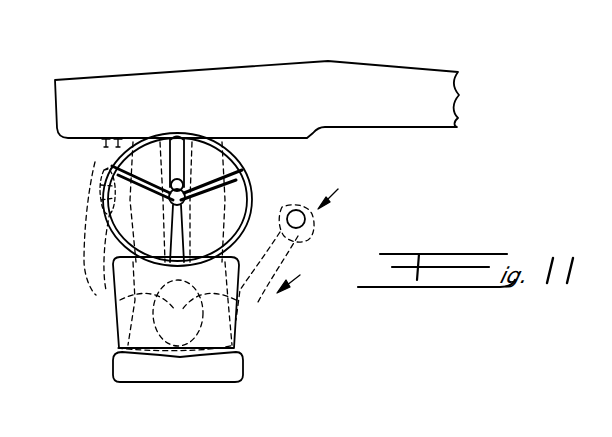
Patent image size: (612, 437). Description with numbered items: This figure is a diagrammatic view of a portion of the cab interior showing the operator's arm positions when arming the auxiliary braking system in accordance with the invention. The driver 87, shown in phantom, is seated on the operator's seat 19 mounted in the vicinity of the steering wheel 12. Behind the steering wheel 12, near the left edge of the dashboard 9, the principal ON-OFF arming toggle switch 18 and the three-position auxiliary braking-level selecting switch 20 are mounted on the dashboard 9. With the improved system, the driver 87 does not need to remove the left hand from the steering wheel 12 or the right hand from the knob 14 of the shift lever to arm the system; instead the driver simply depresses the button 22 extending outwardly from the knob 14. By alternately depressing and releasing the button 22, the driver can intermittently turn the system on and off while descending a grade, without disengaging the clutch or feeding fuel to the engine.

The dashboard 9 is at (237, 92).
The three-position auxiliary braking-level selecting switch 20 is at (129, 138).
The arming toggle switch 18 is at (106, 142).
The steering wheel 12 is at (106, 165).
The operator's seat 19 is at (236, 346).
The knob 14 is at (306, 222).
The button 22 is at (310, 214).
The driver 87 is at (298, 277).